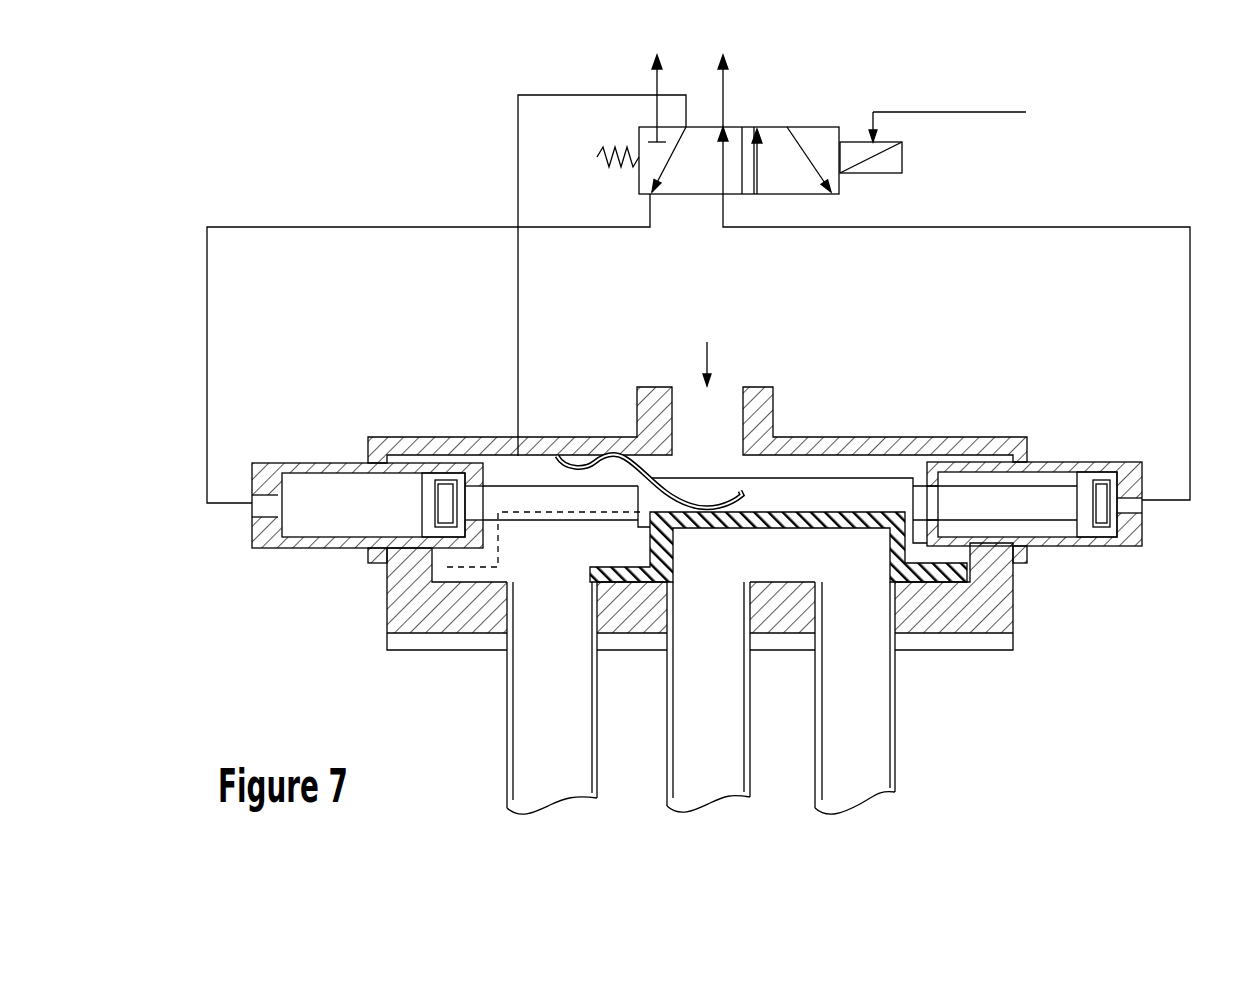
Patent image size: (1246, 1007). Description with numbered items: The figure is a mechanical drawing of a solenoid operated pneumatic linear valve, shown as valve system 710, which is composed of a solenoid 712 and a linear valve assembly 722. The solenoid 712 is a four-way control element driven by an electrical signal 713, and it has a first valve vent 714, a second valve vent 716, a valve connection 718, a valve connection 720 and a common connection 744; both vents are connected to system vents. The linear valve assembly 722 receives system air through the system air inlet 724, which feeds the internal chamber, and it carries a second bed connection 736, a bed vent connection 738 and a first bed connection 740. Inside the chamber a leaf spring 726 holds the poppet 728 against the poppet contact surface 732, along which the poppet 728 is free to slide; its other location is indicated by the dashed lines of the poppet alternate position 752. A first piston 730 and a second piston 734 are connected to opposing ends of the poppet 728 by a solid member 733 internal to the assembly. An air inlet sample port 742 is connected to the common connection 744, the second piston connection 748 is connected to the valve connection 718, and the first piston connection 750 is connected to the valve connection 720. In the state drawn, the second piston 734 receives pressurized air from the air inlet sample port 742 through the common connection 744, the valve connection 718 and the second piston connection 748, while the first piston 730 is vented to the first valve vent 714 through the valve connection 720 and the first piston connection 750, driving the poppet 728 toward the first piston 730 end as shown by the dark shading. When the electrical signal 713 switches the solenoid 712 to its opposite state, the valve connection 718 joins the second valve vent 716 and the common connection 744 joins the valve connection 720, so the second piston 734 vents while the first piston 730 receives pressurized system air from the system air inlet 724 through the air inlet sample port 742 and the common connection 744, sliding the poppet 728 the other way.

The valve system 710 is at (298, 120).
The solenoid 712 is at (827, 40).
The electrical signal 713 is at (950, 136).
The first valve vent 714 is at (725, 87).
The second valve vent 716 is at (651, 80).
The valve connection 718 is at (632, 230).
The valve connection 720 is at (740, 229).
The linear valve assembly 722 is at (585, 369).
The system air inlet 724 is at (711, 350).
The leaf spring 726 is at (707, 503).
The poppet 728 is at (808, 508).
The first piston 730 is at (1034, 548).
The poppet contact surface 732 is at (700, 639).
The solid member 733 is at (812, 477).
The second piston 734 is at (367, 545).
The second bed connection 736 is at (550, 822).
The bed vent connection 738 is at (707, 820).
The first bed connection 740 is at (857, 822).
The air inlet sample port 742 is at (518, 433).
The common connection 744 is at (692, 107).
The second piston connection 748 is at (247, 510).
The first piston connection 750 is at (1146, 507).
The poppet alternate position 752 is at (547, 507).